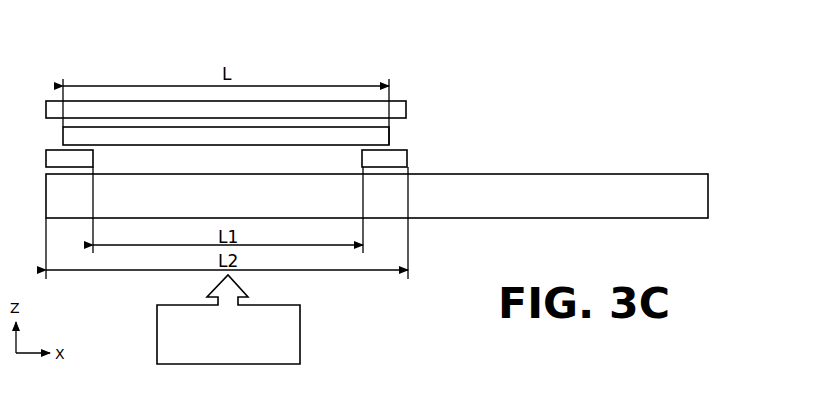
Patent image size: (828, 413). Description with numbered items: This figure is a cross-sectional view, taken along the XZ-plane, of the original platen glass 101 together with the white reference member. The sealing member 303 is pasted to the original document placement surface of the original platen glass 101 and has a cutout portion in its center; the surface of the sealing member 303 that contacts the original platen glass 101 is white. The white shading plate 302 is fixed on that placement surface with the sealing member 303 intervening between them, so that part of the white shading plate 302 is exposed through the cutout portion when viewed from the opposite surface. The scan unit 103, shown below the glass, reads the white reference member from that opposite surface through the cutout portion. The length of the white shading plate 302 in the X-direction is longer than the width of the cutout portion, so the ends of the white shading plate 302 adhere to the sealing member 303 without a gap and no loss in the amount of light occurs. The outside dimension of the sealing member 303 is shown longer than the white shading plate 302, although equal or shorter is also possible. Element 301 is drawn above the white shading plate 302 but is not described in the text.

The original platen glass 101 is at (619, 172).
The scan unit 103 is at (301, 335).
The first member 301 is at (407, 108).
The white shading plate 302 is at (390, 134).
The sealing member 303 is at (408, 156).